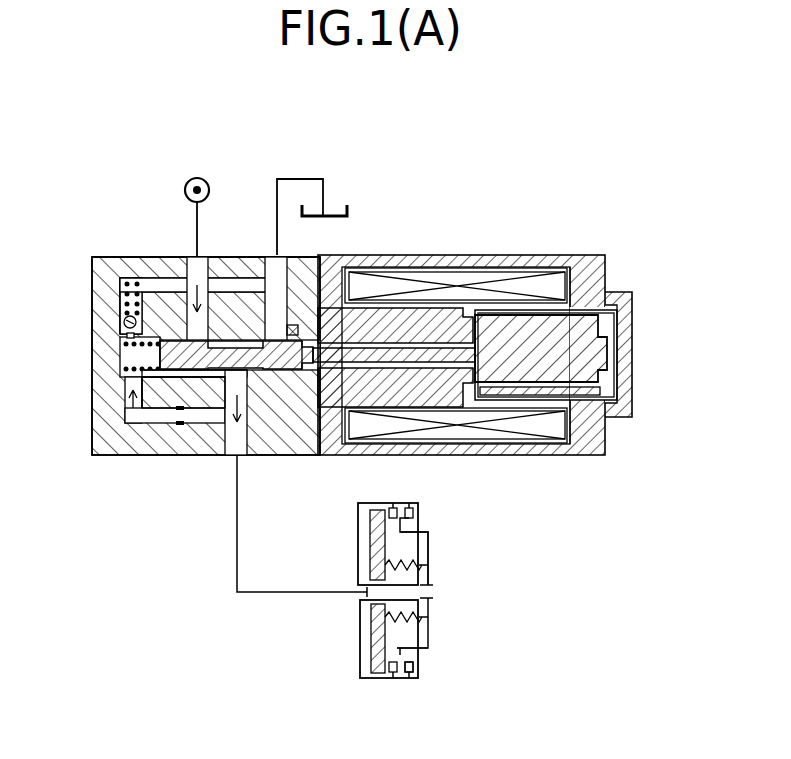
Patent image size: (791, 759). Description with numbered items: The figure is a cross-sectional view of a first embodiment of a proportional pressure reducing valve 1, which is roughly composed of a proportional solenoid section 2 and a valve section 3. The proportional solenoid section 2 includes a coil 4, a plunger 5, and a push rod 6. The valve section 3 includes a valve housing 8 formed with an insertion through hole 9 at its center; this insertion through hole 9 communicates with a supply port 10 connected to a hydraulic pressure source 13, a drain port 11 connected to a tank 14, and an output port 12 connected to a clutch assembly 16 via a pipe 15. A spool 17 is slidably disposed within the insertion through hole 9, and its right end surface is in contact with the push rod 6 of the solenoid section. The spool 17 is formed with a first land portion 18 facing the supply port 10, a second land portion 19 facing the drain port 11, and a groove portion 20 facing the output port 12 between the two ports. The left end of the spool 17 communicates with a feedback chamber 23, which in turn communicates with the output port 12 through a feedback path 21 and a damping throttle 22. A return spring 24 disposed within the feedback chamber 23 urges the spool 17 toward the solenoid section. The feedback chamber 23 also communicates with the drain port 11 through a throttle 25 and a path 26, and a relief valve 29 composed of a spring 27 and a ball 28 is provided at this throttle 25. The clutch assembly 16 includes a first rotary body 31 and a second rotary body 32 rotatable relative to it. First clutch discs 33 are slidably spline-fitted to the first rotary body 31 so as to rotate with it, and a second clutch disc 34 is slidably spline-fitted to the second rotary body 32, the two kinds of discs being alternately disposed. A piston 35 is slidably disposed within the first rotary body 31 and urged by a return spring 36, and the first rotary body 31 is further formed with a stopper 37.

The valve 1 is at (405, 194).
The proportional solenoid section 2 is at (531, 243).
The valve section 3 is at (218, 230).
The coil 4 is at (467, 277).
The plunger 5 is at (630, 327).
The push rod 6 is at (430, 348).
The valve housing 8 is at (100, 445).
The insertion through hole 9 is at (232, 337).
The supply port 10 is at (193, 262).
The drain port 11 is at (273, 267).
The output port 12 is at (238, 443).
The hydraulic pressure source 13 is at (203, 180).
The tank 14 is at (347, 210).
The pipe 15 is at (237, 538).
The clutch assembly 16 is at (457, 570).
The spool 17 is at (298, 372).
The first land portion 18 is at (168, 370).
The second land portion 19 is at (283, 372).
The groove portion 20 is at (217, 368).
The feedback path 21 is at (133, 420).
The damping throttle 22 is at (180, 424).
The feedback chamber 23 is at (122, 355).
The return spring 24 is at (120, 377).
The throttle 25 is at (122, 332).
The path 26 is at (147, 283).
The spring 27 is at (102, 263).
The ball 28 is at (125, 320).
The relief valve 29 is at (106, 291).
The first rotary body 31 is at (360, 612).
The second rotary body 32 is at (430, 540).
The first clutch discs 33 is at (408, 674).
The second clutch disc 34 is at (403, 655).
The piston 35 is at (373, 642).
The return spring 36 is at (410, 627).
The stopper 37 is at (418, 672).